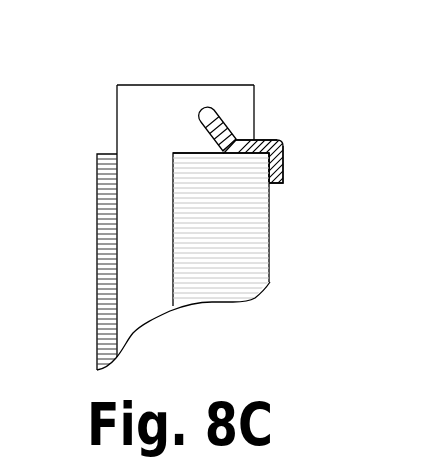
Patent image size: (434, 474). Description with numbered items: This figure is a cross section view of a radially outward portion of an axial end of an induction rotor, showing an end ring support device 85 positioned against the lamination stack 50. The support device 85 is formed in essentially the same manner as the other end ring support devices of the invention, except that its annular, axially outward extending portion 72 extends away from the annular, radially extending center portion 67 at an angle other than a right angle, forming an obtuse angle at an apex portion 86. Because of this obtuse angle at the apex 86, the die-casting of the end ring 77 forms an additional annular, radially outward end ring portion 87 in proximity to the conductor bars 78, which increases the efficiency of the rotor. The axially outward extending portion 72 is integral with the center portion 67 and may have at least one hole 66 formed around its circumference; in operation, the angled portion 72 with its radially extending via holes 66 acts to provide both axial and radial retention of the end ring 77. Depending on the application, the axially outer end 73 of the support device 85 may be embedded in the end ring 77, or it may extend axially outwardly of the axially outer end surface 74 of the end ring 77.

The lamination stack 50 is at (245, 248).
The hole 66 is at (232, 139).
The center portion 67 is at (268, 139).
The axially outward extending portion 72 is at (211, 112).
The axially outer end 73 is at (202, 113).
The axially outer end surface 74 is at (135, 85).
The end ring 77 is at (127, 98).
The conductor bars 78 is at (135, 272).
The end ring support device 85 is at (281, 162).
The apex portion 86 is at (218, 128).
The radially outward end ring portion 87 is at (220, 152).